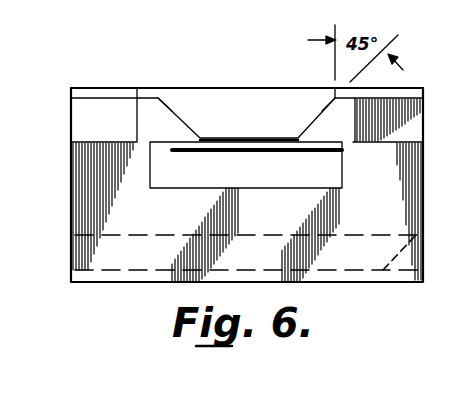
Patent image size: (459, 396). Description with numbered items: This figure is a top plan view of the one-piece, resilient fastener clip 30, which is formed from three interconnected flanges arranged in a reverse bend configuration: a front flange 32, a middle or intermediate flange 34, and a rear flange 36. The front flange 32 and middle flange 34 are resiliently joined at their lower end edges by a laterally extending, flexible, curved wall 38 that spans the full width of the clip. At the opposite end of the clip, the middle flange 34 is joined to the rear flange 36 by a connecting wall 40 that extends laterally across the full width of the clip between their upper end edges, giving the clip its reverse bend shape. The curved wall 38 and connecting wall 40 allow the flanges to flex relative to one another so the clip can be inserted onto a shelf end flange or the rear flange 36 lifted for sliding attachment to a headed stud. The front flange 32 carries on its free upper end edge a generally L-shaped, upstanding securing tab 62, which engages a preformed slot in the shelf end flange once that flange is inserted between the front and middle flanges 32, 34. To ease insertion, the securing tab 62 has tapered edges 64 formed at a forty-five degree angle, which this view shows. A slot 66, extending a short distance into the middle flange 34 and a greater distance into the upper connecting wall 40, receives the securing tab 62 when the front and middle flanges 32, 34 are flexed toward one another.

The fastener clip 30 is at (241, 77).
The front flange 32 is at (399, 91).
The middle flange 34 is at (177, 148).
The rear flange 36 is at (414, 238).
The curved wall 38 is at (88, 117).
The connecting wall 40 is at (396, 226).
The securing tab 62 is at (262, 123).
The tapered edges 64 is at (167, 110).
The slot 66 is at (312, 188).